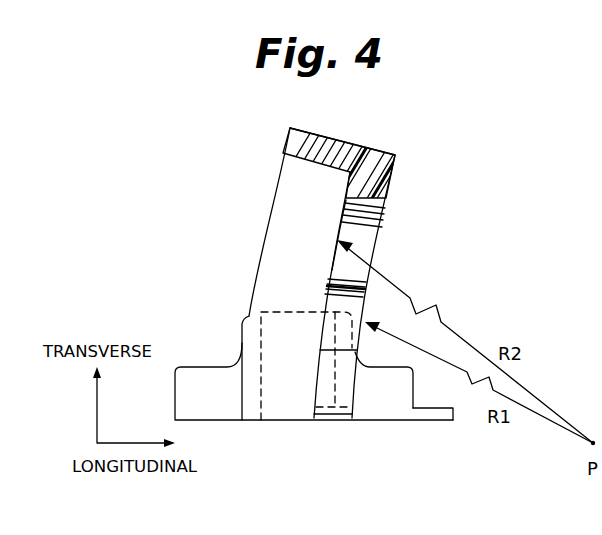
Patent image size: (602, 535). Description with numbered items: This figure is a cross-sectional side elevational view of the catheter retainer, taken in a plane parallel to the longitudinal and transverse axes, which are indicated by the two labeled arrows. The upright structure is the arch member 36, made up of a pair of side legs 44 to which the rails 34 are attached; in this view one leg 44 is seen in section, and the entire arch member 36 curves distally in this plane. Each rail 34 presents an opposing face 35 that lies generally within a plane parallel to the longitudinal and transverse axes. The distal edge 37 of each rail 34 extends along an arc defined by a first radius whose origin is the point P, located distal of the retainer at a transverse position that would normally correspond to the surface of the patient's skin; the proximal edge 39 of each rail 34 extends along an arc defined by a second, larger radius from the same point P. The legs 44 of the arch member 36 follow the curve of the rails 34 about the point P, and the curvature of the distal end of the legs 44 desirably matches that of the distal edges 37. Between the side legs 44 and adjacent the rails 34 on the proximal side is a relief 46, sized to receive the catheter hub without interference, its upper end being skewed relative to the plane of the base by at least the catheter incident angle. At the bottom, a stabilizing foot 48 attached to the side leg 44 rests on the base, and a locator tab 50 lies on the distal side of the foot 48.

The rail 34 is at (370, 223).
The opposing face 35 is at (343, 267).
The arch member 36 is at (380, 135).
The distal edge 37 is at (373, 243).
The proximal edge 39 is at (337, 227).
The side leg 44 is at (287, 173).
The relief 46 is at (293, 206).
The foot 48 is at (378, 408).
The locator tab 50 is at (437, 417).